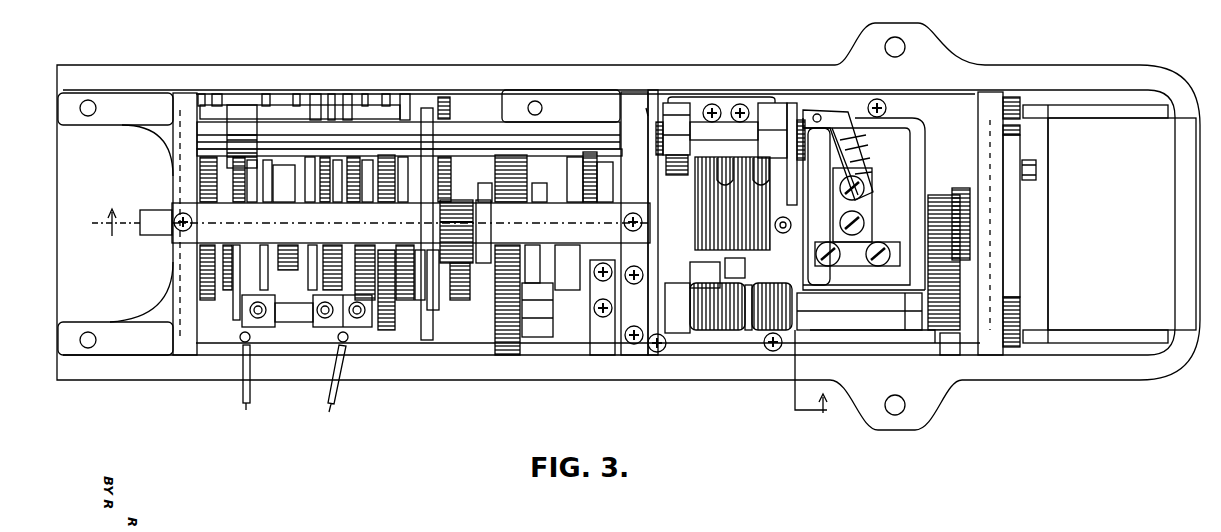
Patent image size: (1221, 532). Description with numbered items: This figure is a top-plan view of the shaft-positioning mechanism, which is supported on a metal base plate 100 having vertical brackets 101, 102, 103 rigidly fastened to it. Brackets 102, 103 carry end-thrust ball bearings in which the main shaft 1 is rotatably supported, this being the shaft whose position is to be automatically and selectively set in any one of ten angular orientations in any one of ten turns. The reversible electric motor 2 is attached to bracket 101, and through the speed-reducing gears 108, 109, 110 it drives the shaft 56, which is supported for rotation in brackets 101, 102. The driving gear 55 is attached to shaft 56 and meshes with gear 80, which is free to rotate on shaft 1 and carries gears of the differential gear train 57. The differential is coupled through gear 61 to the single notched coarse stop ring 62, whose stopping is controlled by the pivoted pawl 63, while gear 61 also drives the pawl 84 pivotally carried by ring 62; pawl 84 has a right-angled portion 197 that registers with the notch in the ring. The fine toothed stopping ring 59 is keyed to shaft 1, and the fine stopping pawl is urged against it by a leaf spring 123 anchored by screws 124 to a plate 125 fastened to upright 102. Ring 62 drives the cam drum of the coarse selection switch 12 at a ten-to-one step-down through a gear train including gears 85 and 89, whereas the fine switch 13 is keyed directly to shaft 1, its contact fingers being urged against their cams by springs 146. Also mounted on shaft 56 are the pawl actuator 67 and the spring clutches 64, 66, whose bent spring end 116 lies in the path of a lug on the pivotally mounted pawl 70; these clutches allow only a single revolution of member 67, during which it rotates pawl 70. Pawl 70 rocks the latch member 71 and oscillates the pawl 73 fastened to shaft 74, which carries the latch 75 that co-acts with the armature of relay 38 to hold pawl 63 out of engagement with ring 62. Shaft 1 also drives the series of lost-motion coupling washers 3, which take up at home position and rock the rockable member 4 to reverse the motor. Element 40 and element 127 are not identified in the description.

The main shaft 1 is at (647, 104).
The reversible electric motor 2 is at (1132, 325).
The lost-motion coupling washers 3 is at (749, 197).
The rockable member 4 is at (459, 321).
The coarse selection switch 12 is at (324, 329).
The fine switch 13 is at (278, 347).
The relay 38 is at (882, 170).
The lever arm 40 is at (814, 100).
The driving gear 55 is at (500, 350).
The shaft 56 is at (970, 322).
The differential gear train 57 is at (490, 277).
The fine toothed stopping ring 59 is at (600, 200).
The gear 61 is at (460, 190).
The single notched ring 62 is at (440, 300).
The pivoted pawl 63 is at (428, 108).
The single-turn clutch 64 is at (760, 348).
The slip friction clutch 66 is at (722, 348).
The pawl actuator 67 is at (684, 335).
The pawl 70 is at (735, 265).
The latch member 71 is at (778, 282).
The pawl 73 is at (668, 103).
The shaft 74 is at (568, 134).
The latch 75 is at (770, 128).
The gear 80 is at (528, 168).
The pawl 84 is at (410, 300).
The gear 85 is at (447, 270).
The gear 89 is at (390, 158).
The metal base plate 100 is at (1022, 72).
The vertical bracket 101 is at (993, 345).
The vertical bracket 102 is at (653, 90).
The vertical bracket 103 is at (185, 356).
The speed-reducing gear 108 is at (955, 188).
The speed-reducing gear 109 is at (935, 200).
The speed-reducing gear 110 is at (946, 355).
The right-hand end of spring 116 is at (738, 335).
The leaf spring 123 is at (596, 355).
The screws 124 is at (600, 282).
The plate 125 is at (636, 345).
The screw 127 is at (782, 216).
The springs 146 is at (347, 96).
The right-angled portion of pawl 197 is at (423, 300).